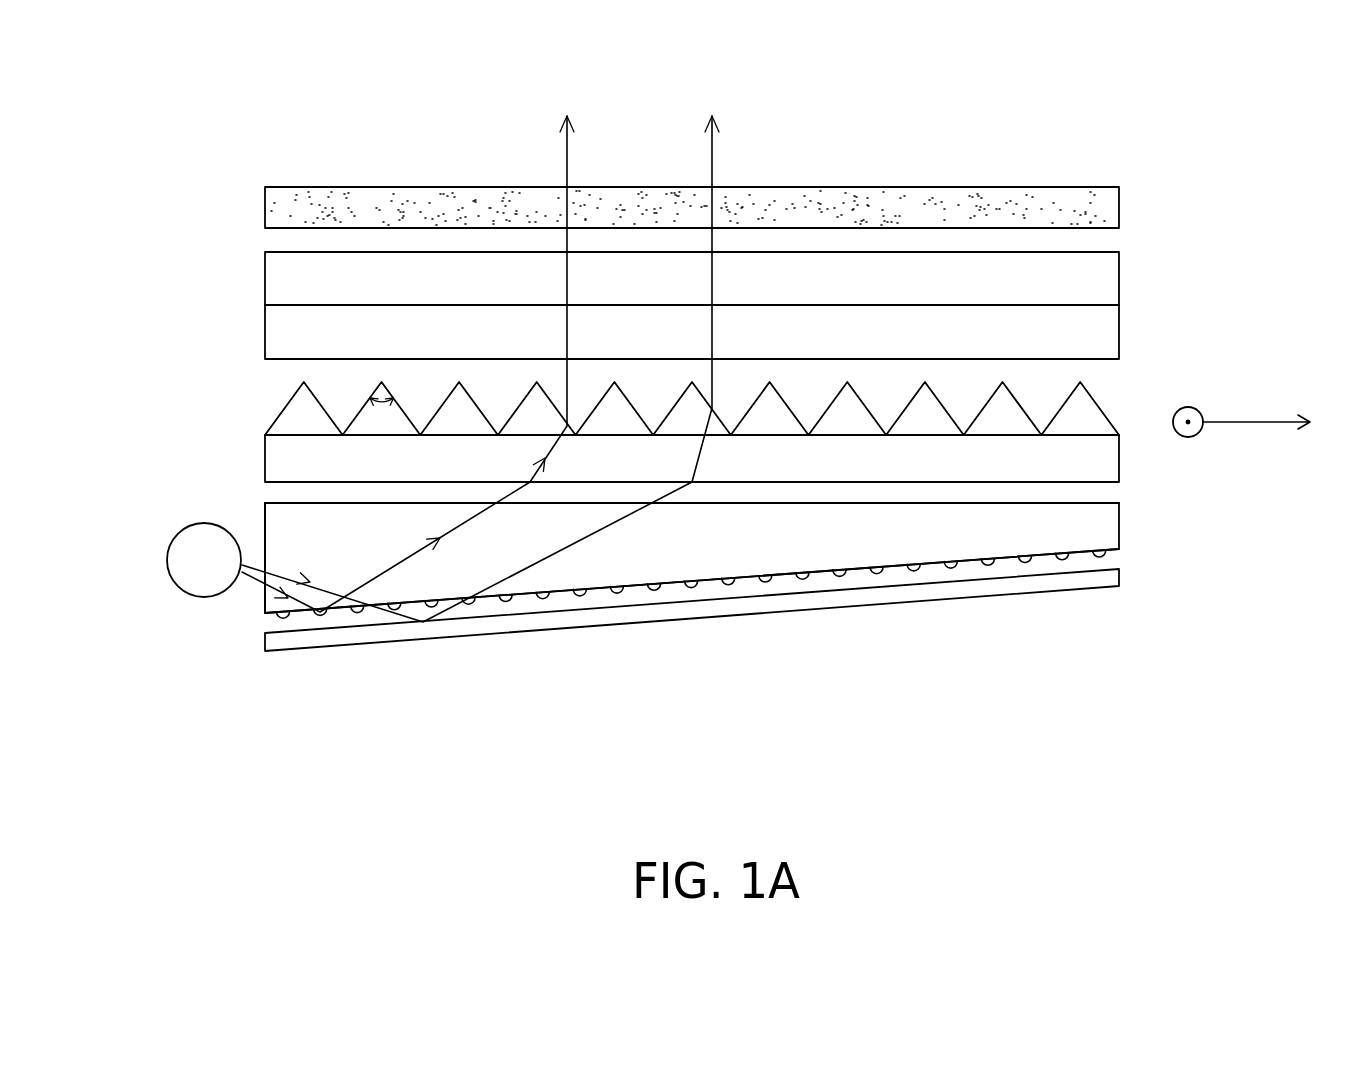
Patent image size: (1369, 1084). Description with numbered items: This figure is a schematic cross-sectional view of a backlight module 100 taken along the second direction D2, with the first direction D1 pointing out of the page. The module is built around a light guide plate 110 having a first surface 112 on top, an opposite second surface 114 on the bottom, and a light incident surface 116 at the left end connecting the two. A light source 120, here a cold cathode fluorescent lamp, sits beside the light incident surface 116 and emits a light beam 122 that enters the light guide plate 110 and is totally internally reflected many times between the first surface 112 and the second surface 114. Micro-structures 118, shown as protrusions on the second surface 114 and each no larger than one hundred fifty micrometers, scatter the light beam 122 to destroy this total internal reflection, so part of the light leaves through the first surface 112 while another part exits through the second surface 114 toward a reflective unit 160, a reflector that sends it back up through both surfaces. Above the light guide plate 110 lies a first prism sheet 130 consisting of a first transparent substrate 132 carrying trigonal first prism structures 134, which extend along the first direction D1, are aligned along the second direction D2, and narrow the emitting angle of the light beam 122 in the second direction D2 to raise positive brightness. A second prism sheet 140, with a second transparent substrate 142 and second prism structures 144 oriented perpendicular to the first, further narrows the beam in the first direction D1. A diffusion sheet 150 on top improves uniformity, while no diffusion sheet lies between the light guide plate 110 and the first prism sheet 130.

The backlight module 100 is at (1303, 665).
The light guide plate 110 is at (1108, 528).
The first surface 112 is at (1073, 502).
The second surface 114 is at (1082, 554).
The light incident surface 116 is at (265, 530).
The micro-structures 118 is at (655, 588).
The light source 120 is at (183, 562).
The light beam 122 is at (244, 566).
The first prism sheet 130 is at (142, 352).
The first transparent substrate 132 is at (277, 458).
The first prism structures 134 is at (297, 408).
The second prism sheet 140 is at (1222, 252).
The second transparent substrate 142 is at (1102, 342).
The second prism structures 144 is at (1102, 276).
The diffusion sheet 150 is at (276, 207).
The reflective unit 160 is at (980, 592).
The first direction D1 is at (1197, 409).
The second direction D2 is at (1275, 422).